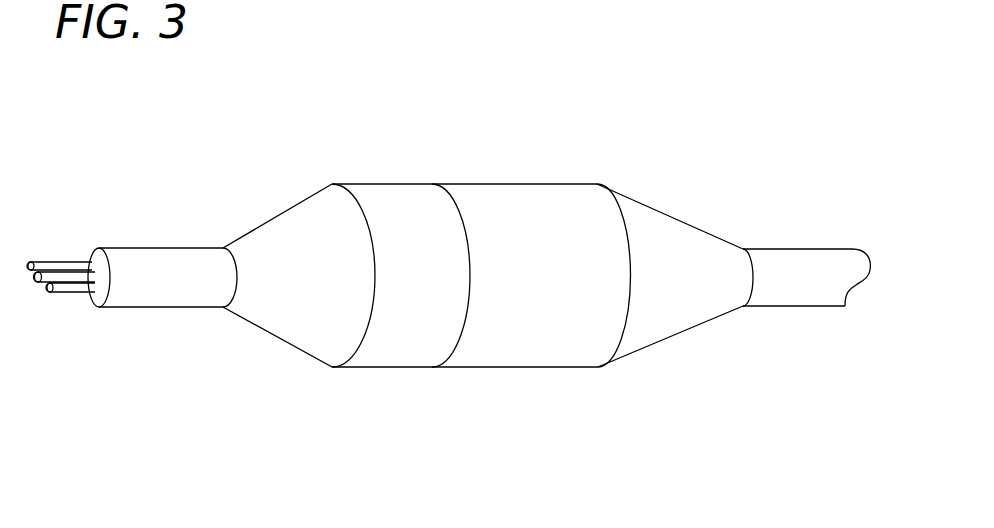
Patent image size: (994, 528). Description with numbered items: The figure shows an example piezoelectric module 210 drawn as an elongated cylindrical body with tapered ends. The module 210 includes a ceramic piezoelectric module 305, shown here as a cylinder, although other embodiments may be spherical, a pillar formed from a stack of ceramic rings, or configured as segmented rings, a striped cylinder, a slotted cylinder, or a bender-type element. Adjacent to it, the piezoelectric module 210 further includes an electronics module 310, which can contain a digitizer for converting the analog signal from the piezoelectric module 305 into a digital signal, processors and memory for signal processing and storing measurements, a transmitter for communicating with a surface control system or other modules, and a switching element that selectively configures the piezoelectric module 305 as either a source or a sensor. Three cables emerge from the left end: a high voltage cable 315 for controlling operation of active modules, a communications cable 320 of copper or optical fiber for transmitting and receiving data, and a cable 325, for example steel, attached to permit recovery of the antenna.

The piezoelectric module 210 is at (585, 134).
The ceramic piezoelectric module 305 is at (519, 327).
The electronics module 310 is at (409, 330).
The high voltage cable 315 is at (69, 299).
The communications cable 320 is at (72, 262).
The cable 325 is at (40, 256).